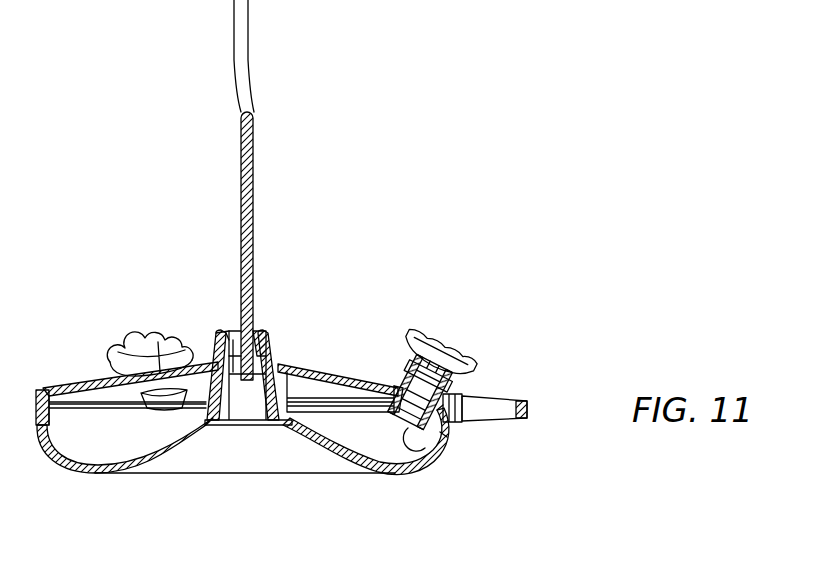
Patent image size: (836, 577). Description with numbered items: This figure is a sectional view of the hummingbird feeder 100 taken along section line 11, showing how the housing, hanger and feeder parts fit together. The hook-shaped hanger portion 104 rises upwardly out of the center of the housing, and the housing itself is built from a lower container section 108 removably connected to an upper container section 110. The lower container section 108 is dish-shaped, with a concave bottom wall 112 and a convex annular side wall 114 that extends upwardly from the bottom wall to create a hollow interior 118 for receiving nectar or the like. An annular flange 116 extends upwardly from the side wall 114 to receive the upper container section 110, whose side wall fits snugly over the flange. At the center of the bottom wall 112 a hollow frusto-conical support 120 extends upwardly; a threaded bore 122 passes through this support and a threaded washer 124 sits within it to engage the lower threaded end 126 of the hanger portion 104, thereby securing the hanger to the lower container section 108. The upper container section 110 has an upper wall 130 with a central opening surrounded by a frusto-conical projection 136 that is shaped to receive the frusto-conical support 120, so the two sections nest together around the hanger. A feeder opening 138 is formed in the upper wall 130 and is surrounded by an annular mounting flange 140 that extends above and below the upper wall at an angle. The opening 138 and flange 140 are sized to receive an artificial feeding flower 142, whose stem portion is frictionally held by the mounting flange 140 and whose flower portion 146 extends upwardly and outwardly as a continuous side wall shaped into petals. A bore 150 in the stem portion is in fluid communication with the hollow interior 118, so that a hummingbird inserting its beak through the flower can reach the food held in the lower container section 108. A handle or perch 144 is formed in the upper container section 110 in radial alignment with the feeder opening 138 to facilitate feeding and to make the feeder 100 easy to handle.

The hummingbird feeder 100 is at (140, 82).
The section line 11 is at (527, 42).
The hanger portion 104 is at (259, 146).
The lower container section 108 is at (88, 475).
The upper container section 110 is at (317, 372).
The bottom wall 112 is at (347, 443).
The annular side wall 114 is at (438, 432).
The annular flange 116 is at (90, 389).
The hollow interior 118 is at (70, 444).
The frusto-conical support 120 is at (236, 322).
The threaded bore 122 is at (258, 326).
The threaded washer 124 is at (280, 342).
The lower threaded end 126 is at (240, 370).
The upper wall 130 is at (397, 375).
The frusto-conical projection 136 is at (228, 323).
The feeder opening 138 is at (417, 432).
The annular mounting flange 140 is at (407, 337).
The artificial feeding flower 142 is at (143, 330).
The handle or perch 144 is at (530, 410).
The flower portion 146 is at (466, 370).
The bore 150 is at (423, 418).